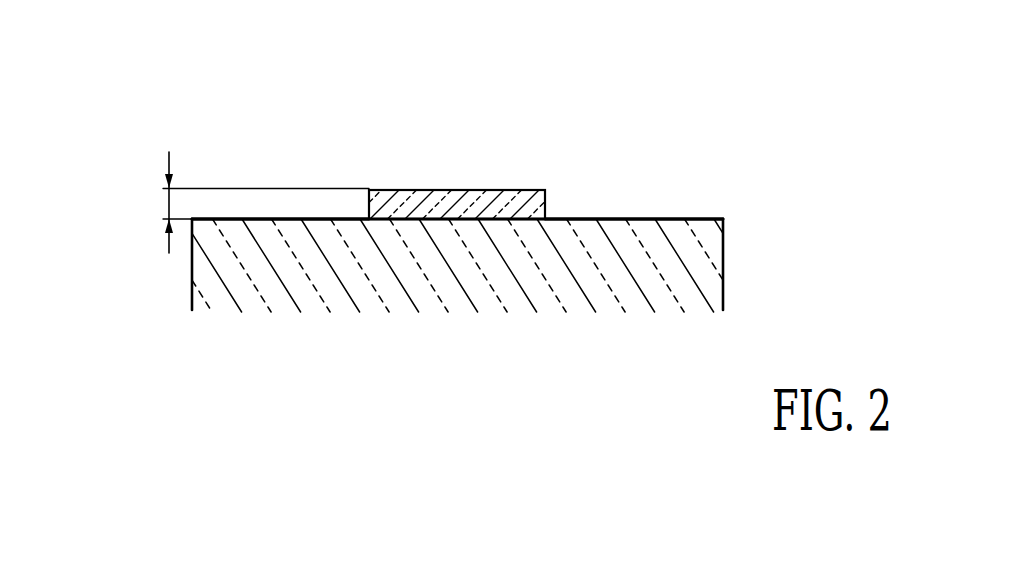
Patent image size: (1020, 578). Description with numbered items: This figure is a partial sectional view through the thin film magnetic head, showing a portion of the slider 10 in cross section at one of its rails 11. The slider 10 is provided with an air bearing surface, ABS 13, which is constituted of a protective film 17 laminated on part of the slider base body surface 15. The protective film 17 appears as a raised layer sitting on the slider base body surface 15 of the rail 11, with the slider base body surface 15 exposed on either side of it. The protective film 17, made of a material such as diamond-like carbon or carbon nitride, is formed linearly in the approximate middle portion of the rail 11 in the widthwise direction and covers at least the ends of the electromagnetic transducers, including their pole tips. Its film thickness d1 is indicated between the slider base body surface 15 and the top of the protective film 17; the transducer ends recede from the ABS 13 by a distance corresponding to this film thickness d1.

The slider 10 is at (218, 282).
The rail 11 is at (724, 258).
The ABS 13 is at (562, 155).
The slider base body surface 15 is at (277, 219).
The protective film 17 is at (467, 200).
The film thickness d1 is at (165, 203).